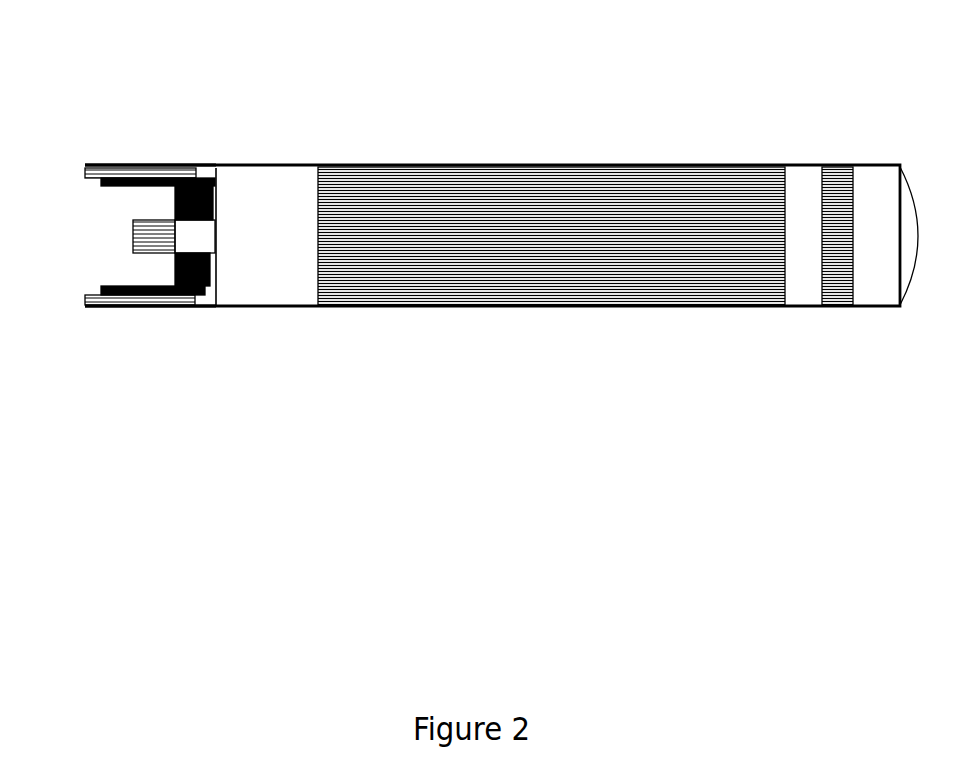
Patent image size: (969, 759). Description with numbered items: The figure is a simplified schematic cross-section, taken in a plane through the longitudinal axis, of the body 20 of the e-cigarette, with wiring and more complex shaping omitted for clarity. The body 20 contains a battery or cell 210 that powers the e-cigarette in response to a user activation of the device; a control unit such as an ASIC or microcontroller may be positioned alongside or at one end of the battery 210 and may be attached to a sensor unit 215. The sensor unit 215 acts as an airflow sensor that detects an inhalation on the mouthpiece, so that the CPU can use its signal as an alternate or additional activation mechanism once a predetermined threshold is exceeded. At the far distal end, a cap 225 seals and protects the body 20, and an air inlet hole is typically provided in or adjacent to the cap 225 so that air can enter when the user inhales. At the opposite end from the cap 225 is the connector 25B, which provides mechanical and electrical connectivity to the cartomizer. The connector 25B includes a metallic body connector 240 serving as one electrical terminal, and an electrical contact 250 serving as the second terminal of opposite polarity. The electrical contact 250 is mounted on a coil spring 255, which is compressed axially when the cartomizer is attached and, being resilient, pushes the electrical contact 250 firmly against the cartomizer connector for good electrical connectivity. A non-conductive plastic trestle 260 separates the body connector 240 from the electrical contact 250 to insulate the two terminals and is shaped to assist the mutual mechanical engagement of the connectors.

The body 20 is at (573, 340).
The connector 25B is at (150, 160).
The battery 210 is at (552, 237).
The sensor unit 215 is at (837, 235).
The cap 225 is at (905, 235).
The body connector 240 is at (91, 304).
The electrical contact 250 is at (155, 238).
The coil spring 255 is at (193, 236).
The trestle 260 is at (197, 180).